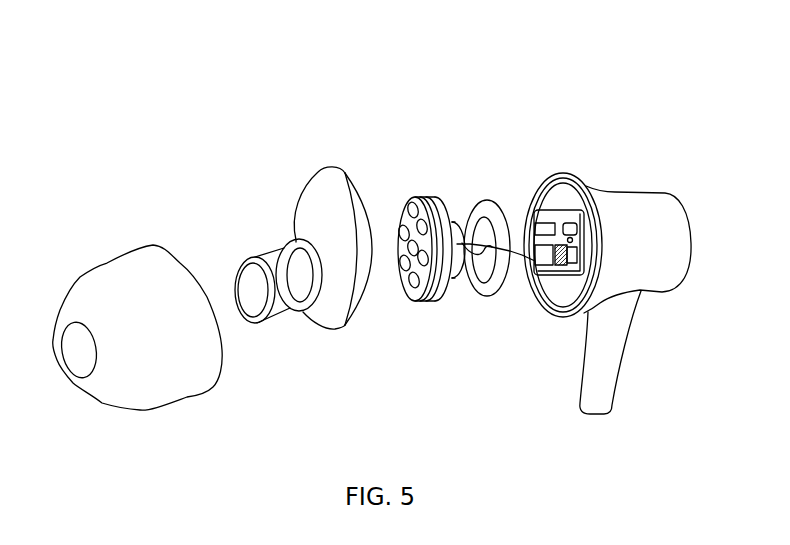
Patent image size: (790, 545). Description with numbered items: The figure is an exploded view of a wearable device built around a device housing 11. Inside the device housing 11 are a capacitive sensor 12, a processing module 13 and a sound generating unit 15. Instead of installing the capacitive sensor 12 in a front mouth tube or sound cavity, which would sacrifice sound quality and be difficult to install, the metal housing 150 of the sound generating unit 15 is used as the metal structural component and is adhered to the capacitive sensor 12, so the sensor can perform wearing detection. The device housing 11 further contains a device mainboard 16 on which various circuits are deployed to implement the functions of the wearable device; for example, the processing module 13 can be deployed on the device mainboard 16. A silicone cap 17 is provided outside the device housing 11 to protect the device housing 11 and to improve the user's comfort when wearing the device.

The device housing 11 is at (612, 192).
The capacitive sensor 12 is at (490, 297).
The processing module 13 is at (570, 271).
The sound generating unit 15 is at (428, 303).
The device mainboard 16 is at (542, 207).
The silicone cap 17 is at (102, 262).
The metal housing 150 is at (453, 281).